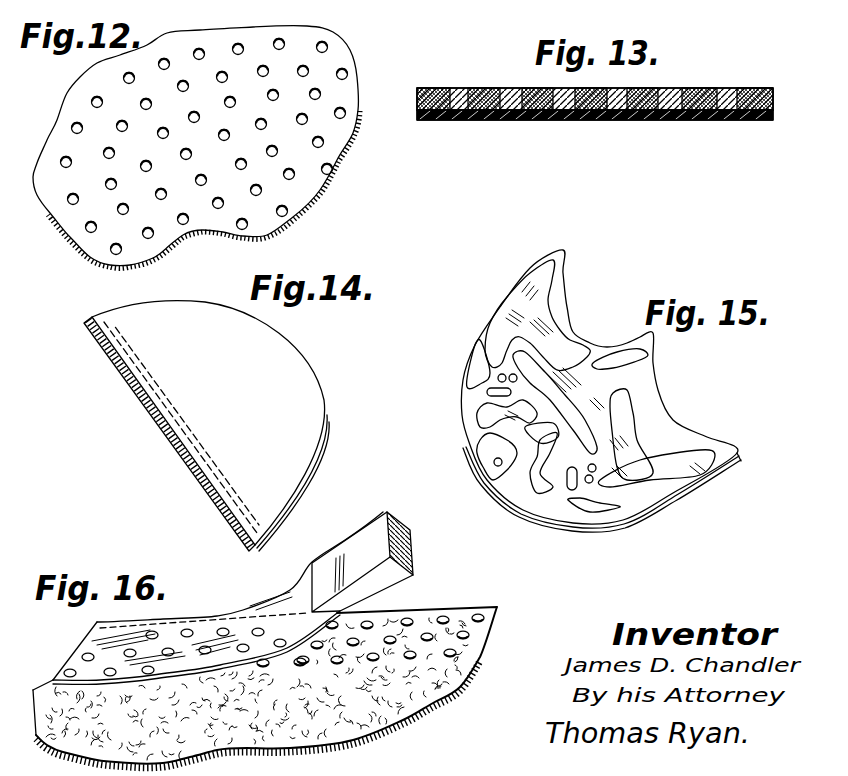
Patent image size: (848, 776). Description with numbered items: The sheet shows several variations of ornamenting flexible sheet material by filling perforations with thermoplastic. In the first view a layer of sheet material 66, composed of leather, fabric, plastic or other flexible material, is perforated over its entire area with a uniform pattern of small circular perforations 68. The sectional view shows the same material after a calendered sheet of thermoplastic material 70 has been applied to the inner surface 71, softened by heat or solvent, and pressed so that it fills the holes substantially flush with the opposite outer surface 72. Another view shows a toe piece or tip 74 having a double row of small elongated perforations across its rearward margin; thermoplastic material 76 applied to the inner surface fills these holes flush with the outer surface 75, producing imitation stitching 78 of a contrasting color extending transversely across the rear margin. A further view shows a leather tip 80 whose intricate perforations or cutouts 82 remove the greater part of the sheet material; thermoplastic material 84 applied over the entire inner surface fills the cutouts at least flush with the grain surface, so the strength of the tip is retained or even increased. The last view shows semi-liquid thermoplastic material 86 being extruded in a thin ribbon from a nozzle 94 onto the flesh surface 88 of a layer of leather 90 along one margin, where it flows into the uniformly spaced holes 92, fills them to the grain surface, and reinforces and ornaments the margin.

In FIG. 12, the layer of sheet material 66 is at (340, 60).
In FIG. 13, the layer of sheet material 66 is at (772, 88).
In FIG. 12, the perforations 68 is at (113, 250).
In FIG. 13, the perforations 68 is at (532, 90).
In FIG. 13, the thermoplastic material 70 is at (775, 118).
In FIG. 13, the inner surface 71 is at (521, 114).
In FIG. 13, the outer surface 72 is at (693, 85).
In FIG. 14, the toe piece or tip 74 is at (322, 380).
In FIG. 14, the outer surface 75 is at (287, 430).
In FIG. 14, the thermoplastic material 76 is at (172, 440).
In FIG. 14, the imitation stitching 78 is at (145, 370).
In FIG. 15, the leather tip 80 is at (560, 265).
In FIG. 15, the perforations or cutouts 82 is at (477, 350).
In FIG. 15, the thermoplastic material 84 is at (640, 445).
In FIG. 16, the thermoplastic material 86 is at (233, 610).
In FIG. 16, the flesh surface 88 is at (410, 697).
In FIG. 16, the layer of leather 90 is at (476, 683).
In FIG. 16, the holes 92 is at (478, 615).
In FIG. 16, the nozzle 94 is at (370, 530).